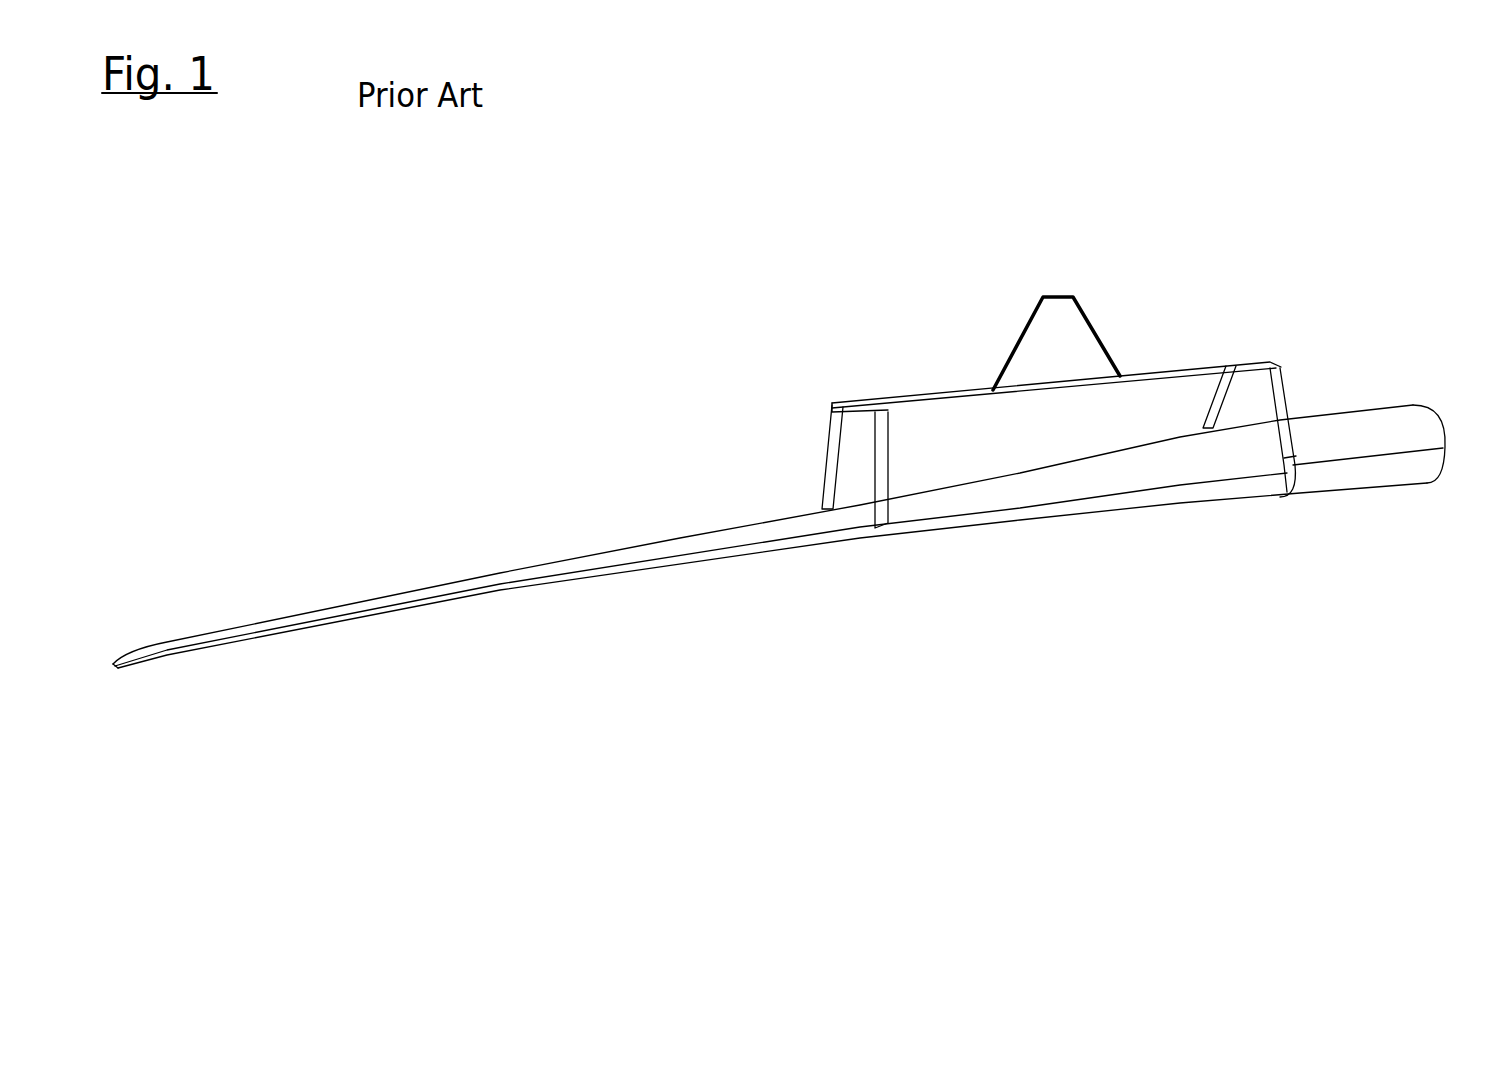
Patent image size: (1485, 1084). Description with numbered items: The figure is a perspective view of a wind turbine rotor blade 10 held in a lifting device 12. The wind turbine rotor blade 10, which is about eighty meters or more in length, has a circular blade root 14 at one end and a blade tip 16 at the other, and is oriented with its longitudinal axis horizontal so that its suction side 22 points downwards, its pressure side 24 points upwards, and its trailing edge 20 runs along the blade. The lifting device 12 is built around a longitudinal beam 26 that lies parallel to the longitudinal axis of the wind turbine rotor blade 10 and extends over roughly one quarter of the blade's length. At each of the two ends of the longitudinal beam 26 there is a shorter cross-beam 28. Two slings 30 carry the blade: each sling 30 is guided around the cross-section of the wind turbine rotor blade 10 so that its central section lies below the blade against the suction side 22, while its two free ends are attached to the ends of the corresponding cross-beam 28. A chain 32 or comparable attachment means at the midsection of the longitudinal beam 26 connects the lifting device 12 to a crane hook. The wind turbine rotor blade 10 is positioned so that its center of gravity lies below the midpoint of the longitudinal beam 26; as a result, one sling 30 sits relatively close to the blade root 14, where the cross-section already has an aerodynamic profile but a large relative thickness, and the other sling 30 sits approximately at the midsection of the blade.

The wind turbine rotor blade 10 is at (724, 606).
The lifting device 12 is at (1157, 289).
The blade root 14 is at (1432, 415).
The blade tip 16 is at (113, 668).
The trailing edge 20 is at (1200, 483).
The suction side 22 is at (1323, 485).
The pressure side 24 is at (793, 527).
The longitudinal beam 26 is at (932, 392).
The cross-beam 28 is at (843, 405).
The sling 30 is at (1295, 415).
The chain 32 is at (1020, 330).